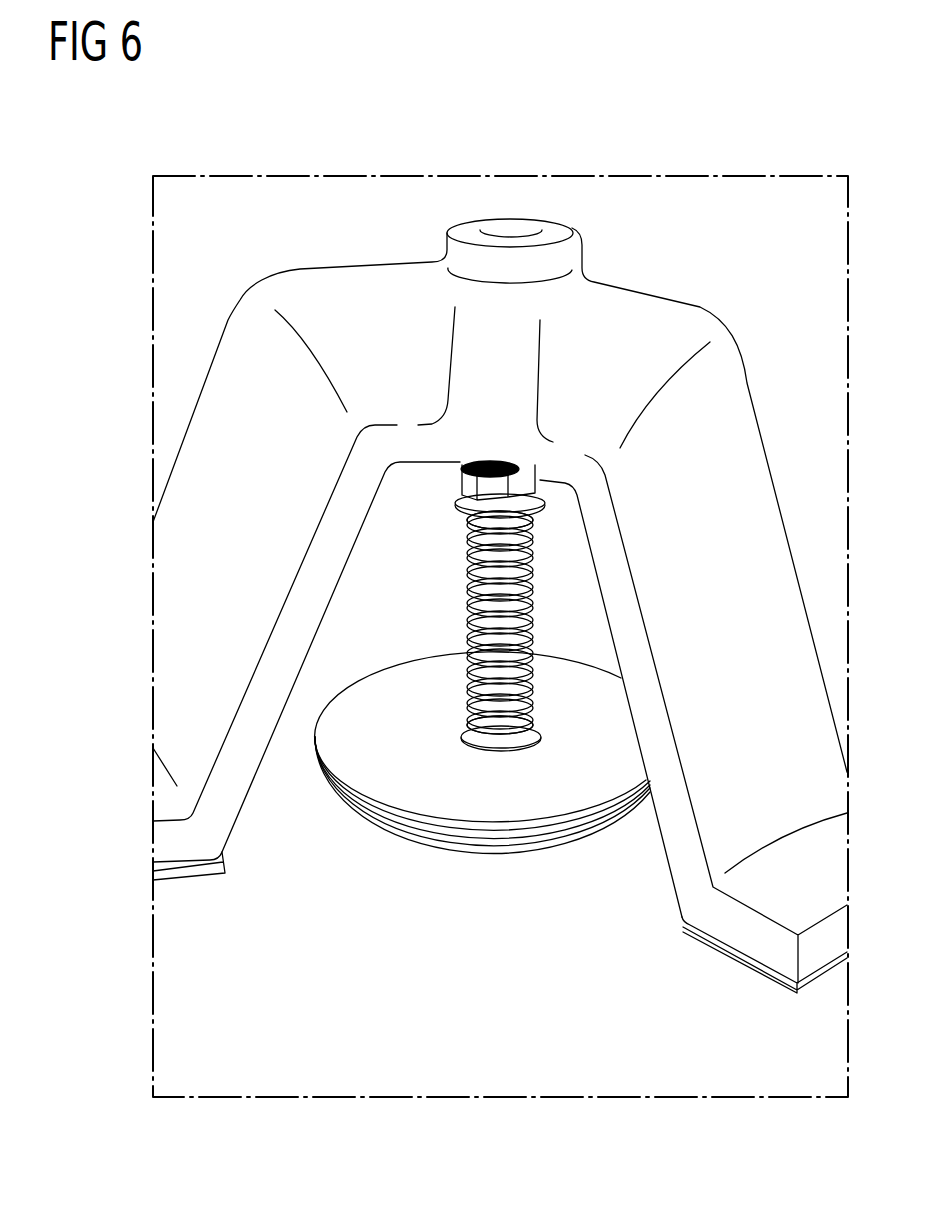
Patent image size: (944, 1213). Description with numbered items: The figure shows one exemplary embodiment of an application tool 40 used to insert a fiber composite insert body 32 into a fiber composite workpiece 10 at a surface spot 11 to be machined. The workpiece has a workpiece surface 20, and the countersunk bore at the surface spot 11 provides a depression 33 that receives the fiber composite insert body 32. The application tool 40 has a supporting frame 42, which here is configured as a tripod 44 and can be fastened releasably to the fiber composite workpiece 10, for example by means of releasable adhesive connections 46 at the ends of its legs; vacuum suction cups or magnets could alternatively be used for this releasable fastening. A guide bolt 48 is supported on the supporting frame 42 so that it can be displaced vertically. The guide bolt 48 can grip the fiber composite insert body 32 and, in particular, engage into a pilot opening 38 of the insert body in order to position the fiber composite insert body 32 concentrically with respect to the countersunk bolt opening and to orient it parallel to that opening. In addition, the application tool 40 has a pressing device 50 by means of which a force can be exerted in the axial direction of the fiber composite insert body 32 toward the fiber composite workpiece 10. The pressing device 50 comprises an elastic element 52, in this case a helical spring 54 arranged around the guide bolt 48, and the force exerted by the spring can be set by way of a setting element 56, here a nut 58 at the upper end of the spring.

The fiber composite workpiece 10 is at (137, 953).
The surface spot 11 is at (422, 913).
The workpiece surface 20 is at (167, 1052).
The fiber composite insert body 32 is at (368, 690).
The depression 33 is at (421, 828).
The pilot opening 38 is at (460, 730).
The application tool 40 is at (320, 207).
The supporting frame 42 is at (253, 390).
The tripod 44 is at (725, 497).
The releasable adhesive connections 46 is at (203, 883).
The guide bolt 48 is at (468, 633).
The pressing device 50 is at (350, 520).
The elastic element 52 is at (468, 568).
The helical spring 54 is at (468, 600).
The setting element 56 is at (490, 487).
The nut 58 is at (532, 490).